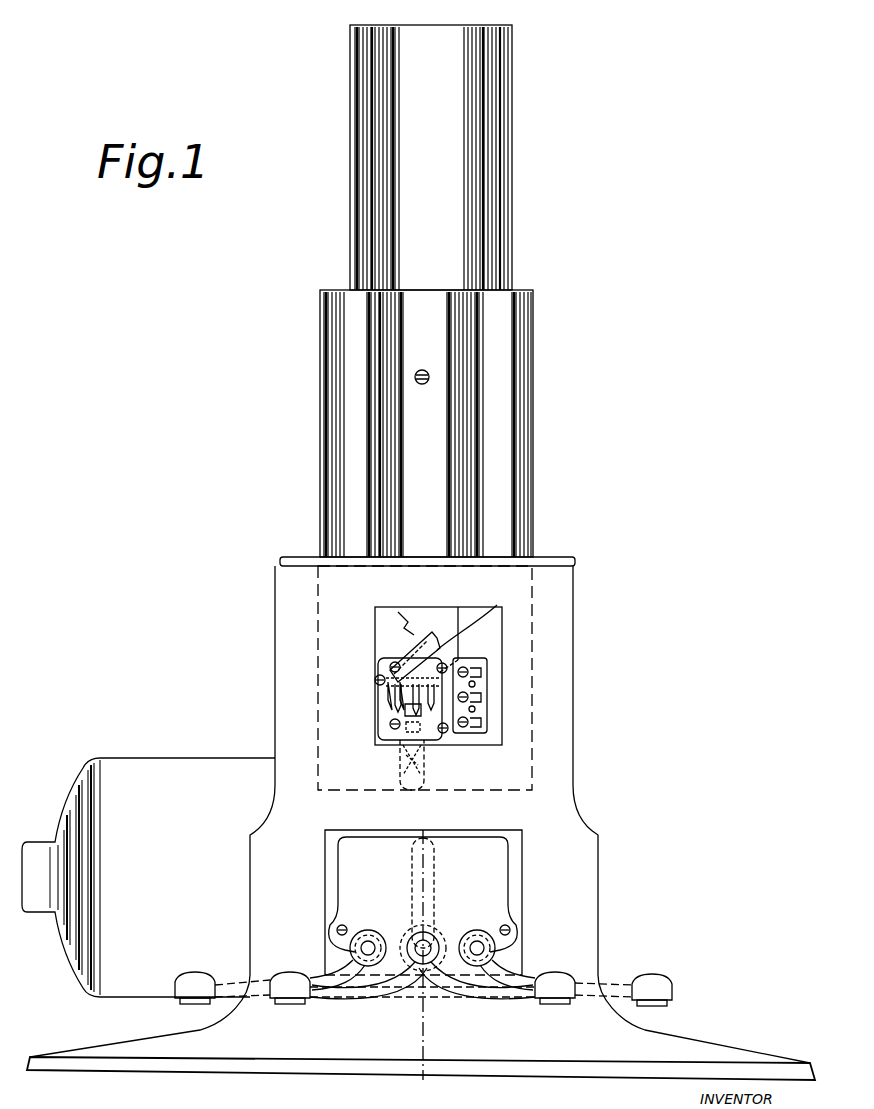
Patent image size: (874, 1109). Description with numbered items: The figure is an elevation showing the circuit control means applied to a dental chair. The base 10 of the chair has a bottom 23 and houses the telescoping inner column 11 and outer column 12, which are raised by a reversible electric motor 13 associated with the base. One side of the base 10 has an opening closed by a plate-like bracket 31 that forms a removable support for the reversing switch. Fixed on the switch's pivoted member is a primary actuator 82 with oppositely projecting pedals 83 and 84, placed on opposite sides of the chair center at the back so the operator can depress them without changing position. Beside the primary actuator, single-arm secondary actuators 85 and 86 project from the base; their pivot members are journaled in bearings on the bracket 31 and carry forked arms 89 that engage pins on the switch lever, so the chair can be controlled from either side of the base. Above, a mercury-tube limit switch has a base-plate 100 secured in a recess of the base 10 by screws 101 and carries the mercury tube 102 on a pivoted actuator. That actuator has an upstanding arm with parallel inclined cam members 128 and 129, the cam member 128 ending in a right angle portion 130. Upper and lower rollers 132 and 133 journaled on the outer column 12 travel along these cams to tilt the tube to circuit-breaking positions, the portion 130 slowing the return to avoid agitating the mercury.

The base 10 is at (565, 732).
The inner column 11 is at (398, 178).
The outer column 12 is at (398, 482).
The reversible electric motor 13 is at (148, 877).
The bottom of the base 23 is at (251, 1058).
The bracket 31 is at (377, 1086).
The primary actuator 82 is at (428, 940).
The pedal 83 is at (364, 1005).
The pedal 84 is at (494, 1008).
The secondary actuator 85 is at (233, 980).
The secondary actuator 86 is at (641, 984).
The arms 89 is at (376, 942).
The base-plate 100 is at (400, 716).
The screws 101 is at (438, 736).
The mercury tube 102 is at (398, 685).
The cam member 128 is at (398, 652).
The cam member 129 is at (492, 608).
The right angle portion 130 is at (420, 600).
The upper roller 132 is at (420, 385).
The lower roller 133 is at (442, 672).